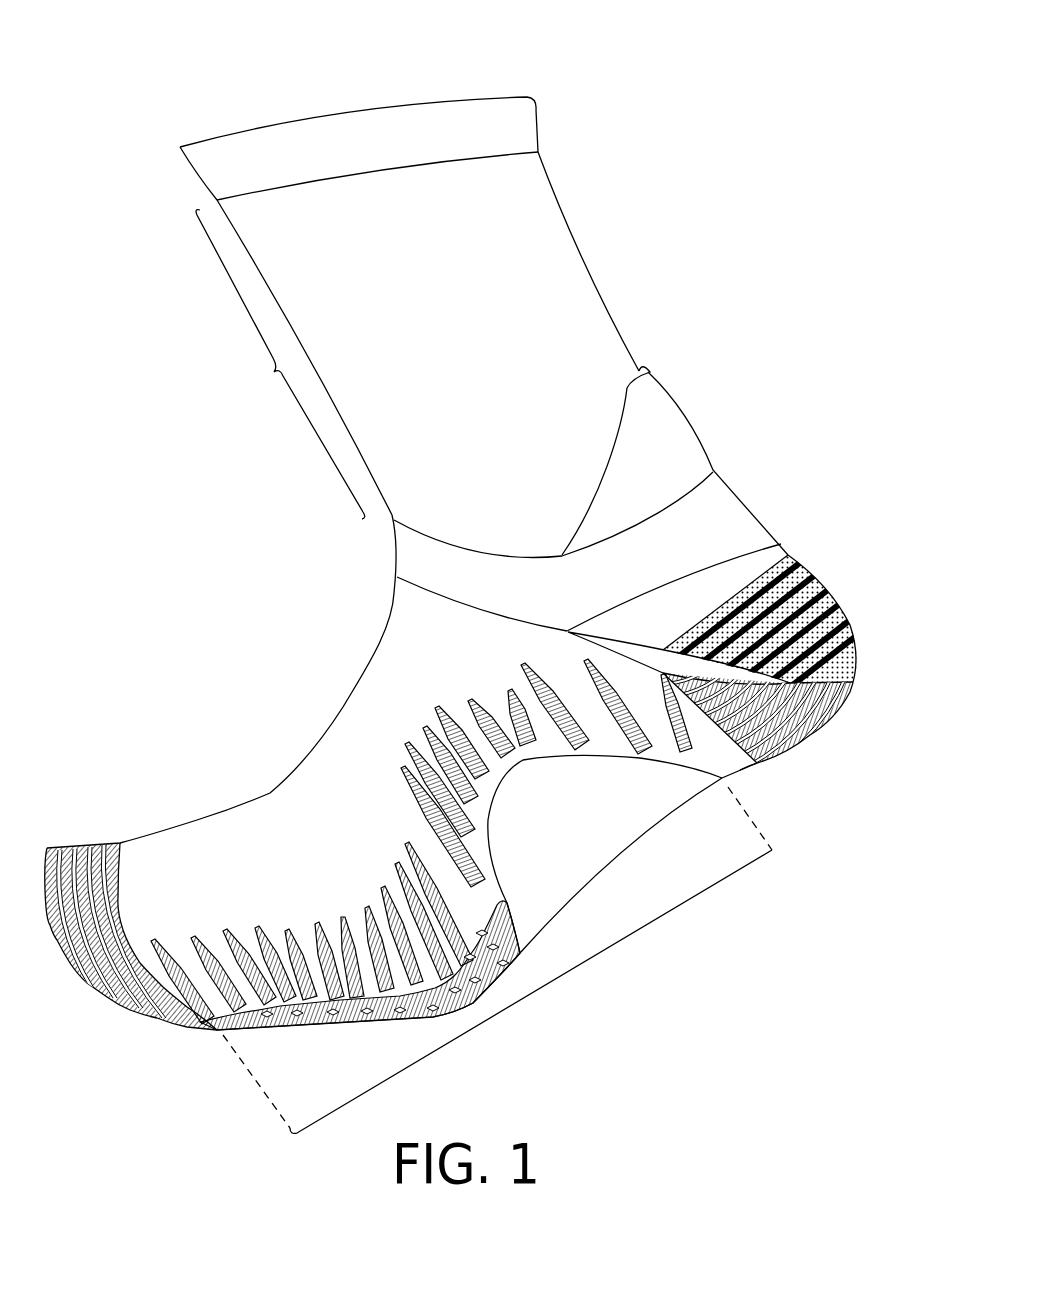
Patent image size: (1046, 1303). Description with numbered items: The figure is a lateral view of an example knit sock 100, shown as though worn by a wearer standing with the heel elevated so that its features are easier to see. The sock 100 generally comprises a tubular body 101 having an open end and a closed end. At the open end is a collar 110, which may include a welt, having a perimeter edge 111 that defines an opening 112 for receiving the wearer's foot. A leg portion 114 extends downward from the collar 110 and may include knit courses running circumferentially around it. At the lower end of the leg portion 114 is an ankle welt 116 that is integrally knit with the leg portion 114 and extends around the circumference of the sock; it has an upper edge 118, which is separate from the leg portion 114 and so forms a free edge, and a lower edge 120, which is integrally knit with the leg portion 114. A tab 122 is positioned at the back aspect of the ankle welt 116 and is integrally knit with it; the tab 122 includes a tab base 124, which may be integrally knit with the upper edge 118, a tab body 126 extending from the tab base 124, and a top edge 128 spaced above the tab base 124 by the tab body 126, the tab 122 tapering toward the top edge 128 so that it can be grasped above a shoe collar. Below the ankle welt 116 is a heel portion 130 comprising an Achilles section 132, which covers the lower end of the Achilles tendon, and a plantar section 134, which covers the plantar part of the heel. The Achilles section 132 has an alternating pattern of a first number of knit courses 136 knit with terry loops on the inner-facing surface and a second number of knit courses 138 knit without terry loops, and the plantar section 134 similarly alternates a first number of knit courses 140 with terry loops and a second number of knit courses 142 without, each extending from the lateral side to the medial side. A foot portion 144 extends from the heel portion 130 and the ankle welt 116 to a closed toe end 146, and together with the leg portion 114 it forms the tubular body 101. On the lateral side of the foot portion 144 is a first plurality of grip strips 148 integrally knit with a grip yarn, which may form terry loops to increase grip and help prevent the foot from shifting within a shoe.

The knit sock 100 is at (730, 108).
The tubular body 101 is at (760, 248).
The collar 110 is at (540, 122).
The perimeter edge 111 is at (508, 92).
The opening 112 is at (403, 68).
The leg portion 114 is at (280, 364).
The ankle welt 116 is at (436, 563).
The upper edge 118 is at (427, 537).
The lower edge 120 is at (430, 597).
The tab 122 is at (733, 408).
The tab base 124 is at (680, 499).
The tab body 126 is at (644, 467).
The top edge 128 is at (644, 366).
The heel portion 130 is at (763, 762).
The Achilles section 132 is at (812, 558).
The plantar section 134 is at (780, 760).
The first number of knit courses 136 is at (683, 637).
The second number of knit courses 138 is at (707, 607).
The first number of knit courses 140 is at (736, 744).
The second number of knit courses 142 is at (756, 763).
The foot portion 144 is at (550, 984).
The closed toe end 146 is at (189, 1030).
The first plurality of grip strips 148 is at (403, 768).